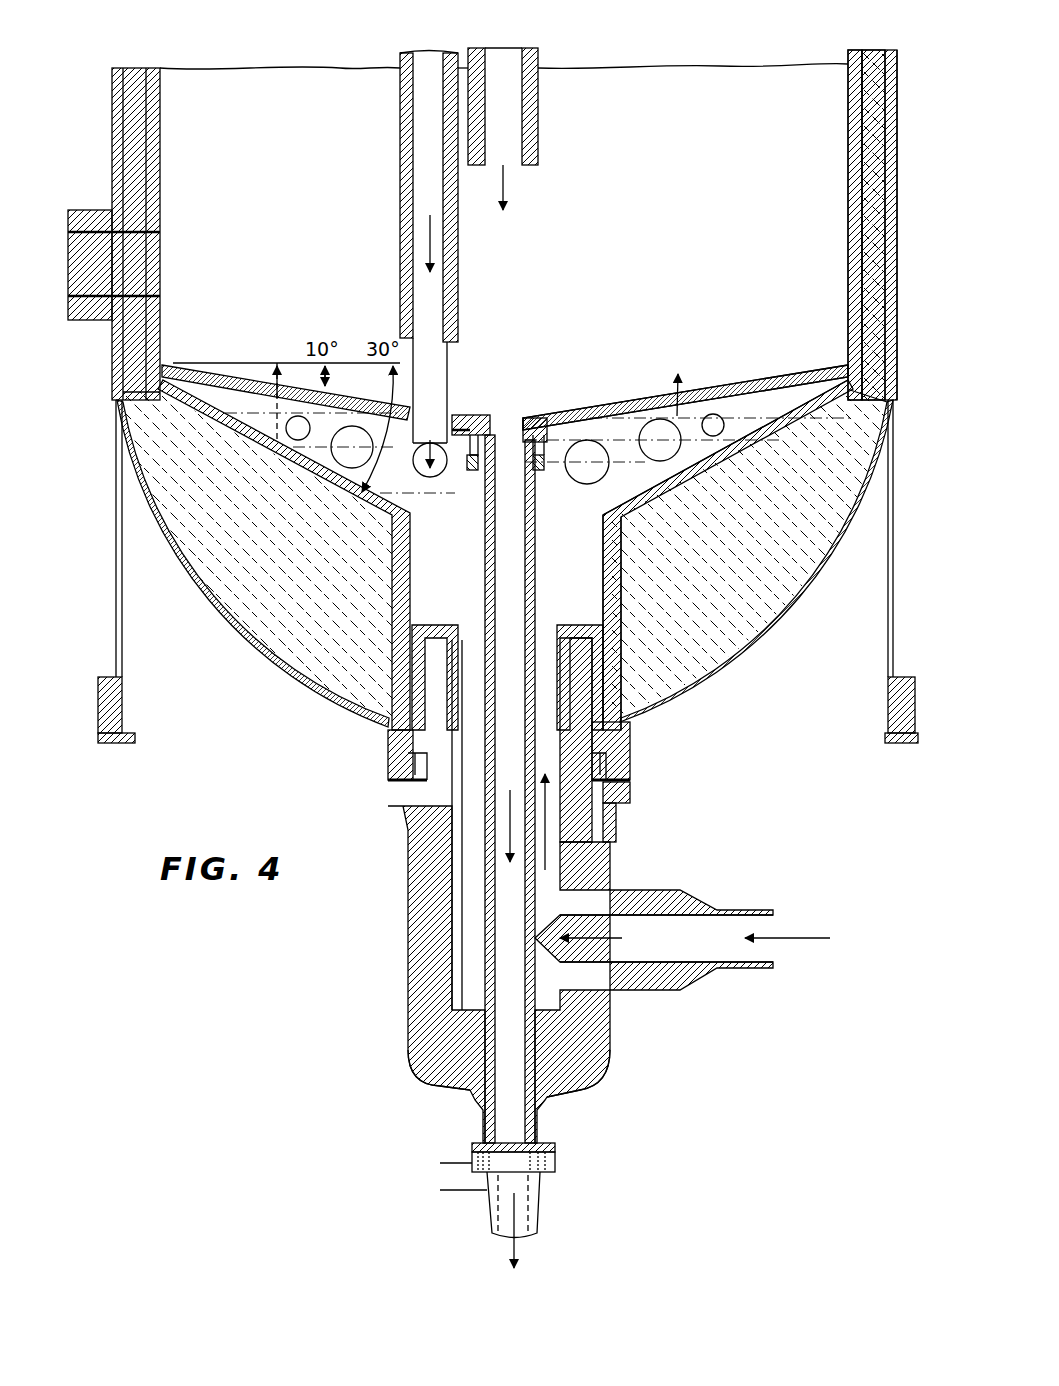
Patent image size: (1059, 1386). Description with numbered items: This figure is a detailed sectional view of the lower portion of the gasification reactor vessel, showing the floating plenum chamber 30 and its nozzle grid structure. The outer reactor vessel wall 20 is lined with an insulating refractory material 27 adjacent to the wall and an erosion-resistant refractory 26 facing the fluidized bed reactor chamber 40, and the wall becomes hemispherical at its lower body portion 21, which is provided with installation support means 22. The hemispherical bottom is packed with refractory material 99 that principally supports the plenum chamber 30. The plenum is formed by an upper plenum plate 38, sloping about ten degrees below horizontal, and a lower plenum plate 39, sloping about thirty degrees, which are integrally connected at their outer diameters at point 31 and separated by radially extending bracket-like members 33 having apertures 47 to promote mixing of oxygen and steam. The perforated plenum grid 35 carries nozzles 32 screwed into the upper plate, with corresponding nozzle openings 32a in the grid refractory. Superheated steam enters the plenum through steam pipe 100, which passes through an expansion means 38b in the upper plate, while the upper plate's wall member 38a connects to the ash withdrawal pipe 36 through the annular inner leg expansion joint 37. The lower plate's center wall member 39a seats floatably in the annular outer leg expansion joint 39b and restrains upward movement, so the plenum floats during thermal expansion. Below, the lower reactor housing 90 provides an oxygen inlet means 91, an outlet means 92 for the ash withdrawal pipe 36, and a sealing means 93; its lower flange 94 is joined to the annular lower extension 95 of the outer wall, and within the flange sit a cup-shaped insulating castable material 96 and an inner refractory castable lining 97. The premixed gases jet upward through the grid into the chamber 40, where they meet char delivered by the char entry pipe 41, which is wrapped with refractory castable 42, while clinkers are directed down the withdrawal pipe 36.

The outer reactor vessel wall 20 is at (905, 228).
The lower body portion 21 is at (737, 670).
The installation support means 22 is at (890, 135).
The erosion-resistant refractory 26 is at (862, 180).
The insulating refractory material 27 is at (877, 270).
The plenum chamber 30 is at (216, 400).
The outer diameter connection point 31 is at (162, 370).
The nozzles 32 is at (606, 412).
The nozzle openings 32a is at (607, 404).
The bracket-like members 33 is at (734, 433).
The perforated plenum grid 35 is at (724, 386).
The ash withdrawal pipe 36 is at (490, 870).
The annular inner leg expansion joint 37 is at (473, 440).
The upper plenum plate 38 is at (790, 384).
The upper plate wall member 38a is at (543, 470).
The expansion means 38b is at (460, 437).
The lower plenum plate 39 is at (830, 425).
The center wall member 39a is at (621, 584).
The annular outer leg expansion joint 39b is at (618, 770).
The fluidized bed reactor chamber 40 is at (690, 88).
The char entry pipe 41 is at (522, 122).
The refractory castable wrapping 42 is at (530, 150).
The apertures 47 is at (352, 448).
The lower reactor housing 90 is at (595, 1078).
The oxygen inlet means 91 is at (700, 905).
The outlet means 92 is at (556, 1162).
The sealing means 93 is at (616, 820).
The lower flange 94 is at (618, 796).
The lower extension 95 is at (402, 760).
The insulating castable material 96 is at (592, 870).
The refractory castable lining 97 is at (455, 935).
The refractory material 99 is at (196, 515).
The steam pipe 100 is at (402, 190).